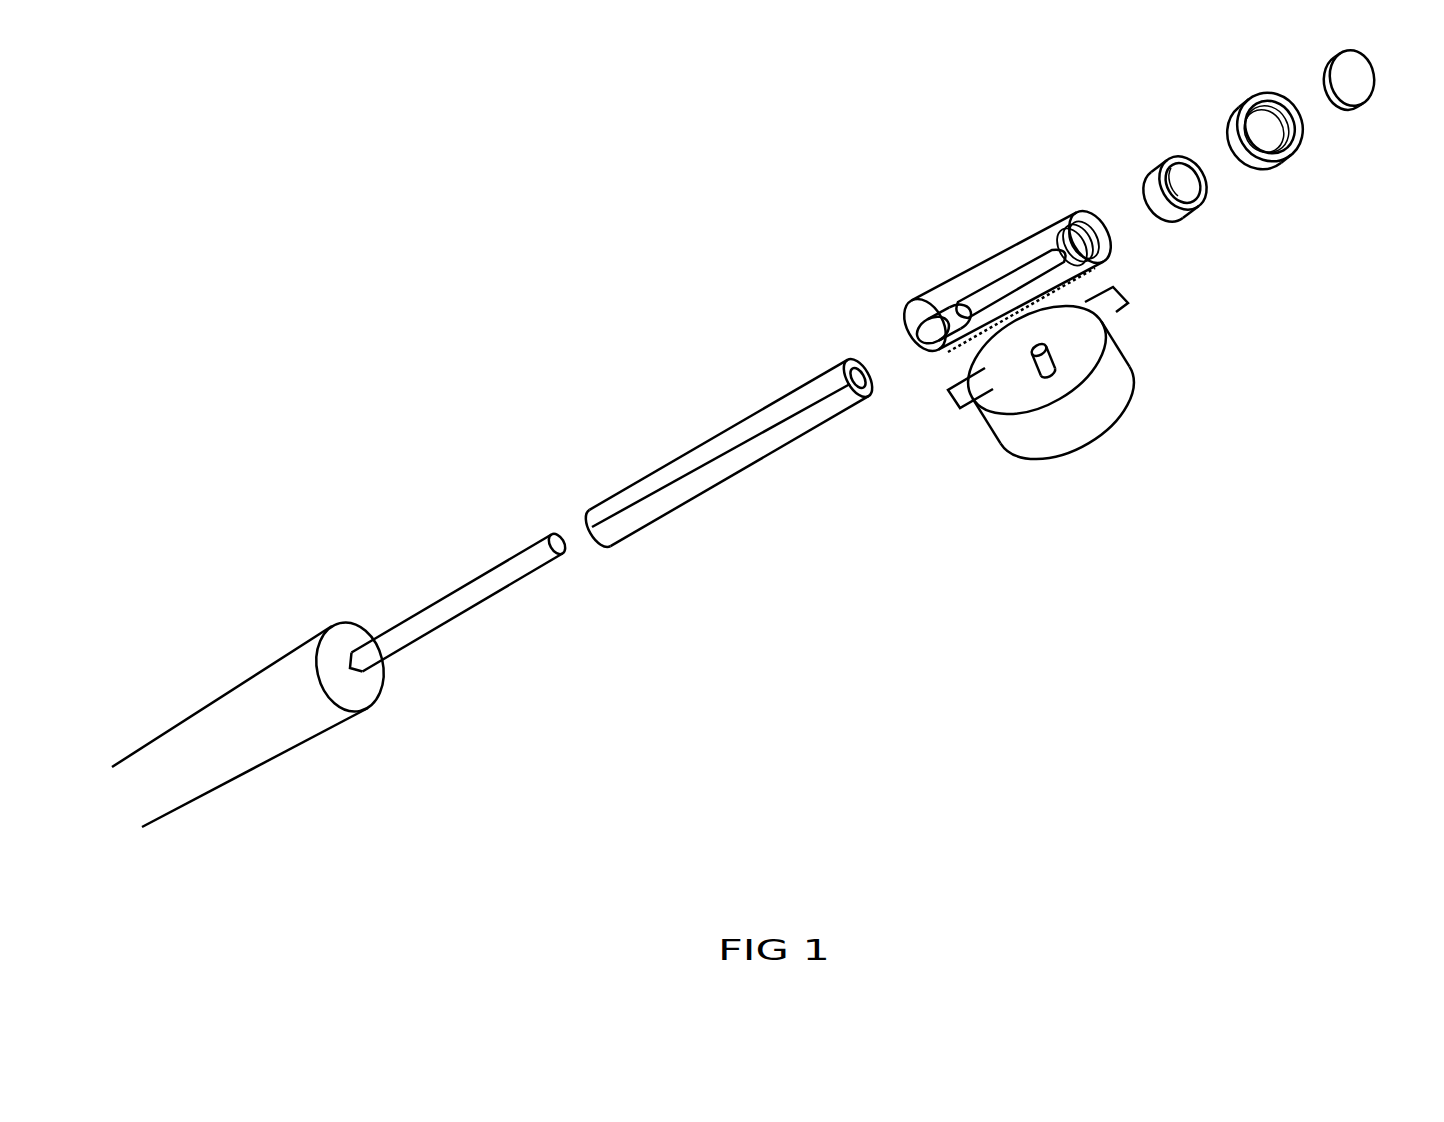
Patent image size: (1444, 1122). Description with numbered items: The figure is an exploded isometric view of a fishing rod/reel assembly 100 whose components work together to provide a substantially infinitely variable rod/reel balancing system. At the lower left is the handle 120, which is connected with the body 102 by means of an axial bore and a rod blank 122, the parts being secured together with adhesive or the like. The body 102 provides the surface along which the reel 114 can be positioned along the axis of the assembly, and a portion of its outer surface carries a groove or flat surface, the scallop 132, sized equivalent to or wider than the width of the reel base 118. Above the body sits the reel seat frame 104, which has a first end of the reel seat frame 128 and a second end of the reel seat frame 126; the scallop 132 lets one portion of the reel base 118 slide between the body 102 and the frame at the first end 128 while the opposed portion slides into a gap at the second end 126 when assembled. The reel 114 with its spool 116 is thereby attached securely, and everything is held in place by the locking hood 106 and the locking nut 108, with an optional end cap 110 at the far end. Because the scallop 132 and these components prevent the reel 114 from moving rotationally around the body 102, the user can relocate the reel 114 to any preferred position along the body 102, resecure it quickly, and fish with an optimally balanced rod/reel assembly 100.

The fishing rod/reel assembly 100 is at (597, 285).
The body 102 is at (697, 476).
The reel seat frame 104 is at (944, 198).
The locking hood 106 is at (1203, 218).
The locking nut 108 is at (1285, 155).
The end cap 110 is at (1368, 110).
The reel 114 is at (1119, 454).
The spool 116 is at (1002, 382).
The reel base 118 is at (1125, 305).
The handle 120 is at (255, 707).
The rod blank 122 is at (417, 630).
The second end of the reel seat frame 126 is at (1060, 217).
The first end of the reel seat frame 128 is at (905, 300).
The scallop 132 is at (798, 423).